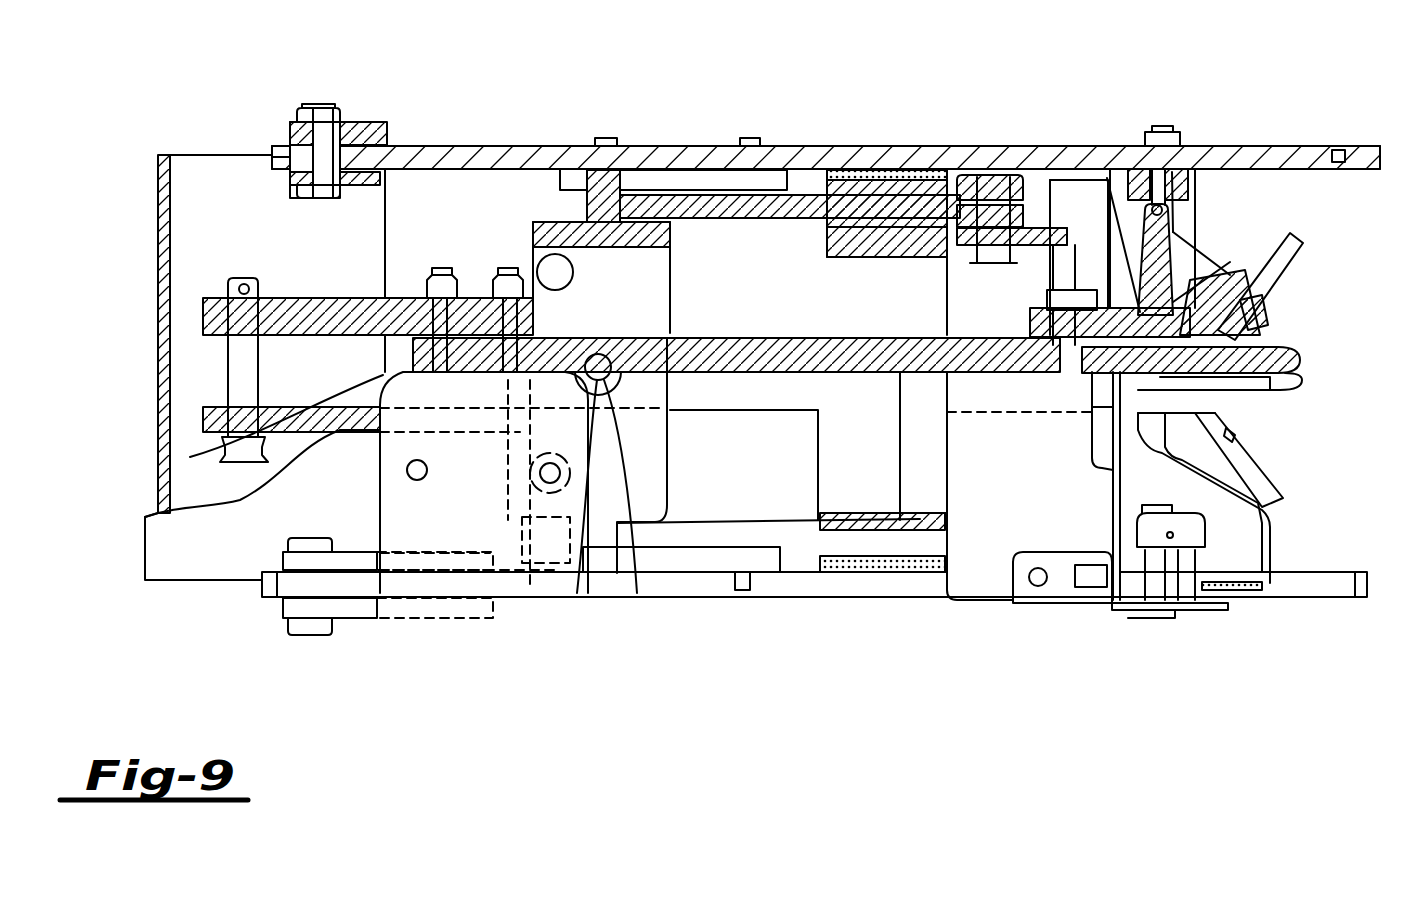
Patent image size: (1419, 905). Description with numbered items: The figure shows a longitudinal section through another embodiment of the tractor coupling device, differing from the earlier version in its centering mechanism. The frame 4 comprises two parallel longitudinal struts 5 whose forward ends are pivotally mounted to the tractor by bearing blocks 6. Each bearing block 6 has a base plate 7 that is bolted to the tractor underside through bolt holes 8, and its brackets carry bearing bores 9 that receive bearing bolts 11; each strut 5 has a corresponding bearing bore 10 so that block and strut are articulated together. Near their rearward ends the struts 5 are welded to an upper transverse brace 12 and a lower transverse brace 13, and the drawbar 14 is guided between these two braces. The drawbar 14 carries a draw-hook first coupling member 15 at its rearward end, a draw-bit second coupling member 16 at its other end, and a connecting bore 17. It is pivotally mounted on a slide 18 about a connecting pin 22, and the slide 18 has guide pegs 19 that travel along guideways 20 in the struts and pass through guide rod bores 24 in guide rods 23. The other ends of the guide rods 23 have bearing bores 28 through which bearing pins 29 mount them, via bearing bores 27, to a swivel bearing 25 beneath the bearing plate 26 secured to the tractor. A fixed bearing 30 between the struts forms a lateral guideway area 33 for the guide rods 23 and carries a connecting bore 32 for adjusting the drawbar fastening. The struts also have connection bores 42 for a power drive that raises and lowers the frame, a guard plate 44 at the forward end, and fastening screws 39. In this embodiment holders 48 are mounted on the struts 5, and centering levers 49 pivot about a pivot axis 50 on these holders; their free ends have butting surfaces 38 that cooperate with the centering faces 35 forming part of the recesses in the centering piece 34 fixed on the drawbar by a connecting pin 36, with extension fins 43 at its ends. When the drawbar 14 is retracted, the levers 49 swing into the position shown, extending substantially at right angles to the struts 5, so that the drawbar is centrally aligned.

The frame 4 is at (960, 190).
The longitudinal struts 5 is at (807, 165).
The bearing blocks 6 is at (387, 146).
The base plate 7 is at (383, 490).
The bolt holes 8 is at (428, 475).
The bearing bores 9 is at (330, 104).
The bearing bore 10 is at (323, 200).
The bearing bolts 11 is at (387, 128).
The upper transverse brace 12 is at (1232, 542).
The lower transverse brace 13 is at (1200, 200).
The drawbar 14 is at (750, 348).
The first coupling member 15 is at (1300, 380).
The second coupling member 16 is at (208, 303).
The connecting bore 17 is at (640, 598).
The slide 18 is at (573, 272).
The guide pegs 19 is at (600, 178).
The guideways 20 is at (686, 175).
The connecting pin 22 is at (540, 474).
The guide rods 23 is at (845, 215).
The guide rod bores 24 is at (615, 205).
The swivel bearing 25 is at (998, 513).
The bearing plate 26 is at (1055, 587).
The bearing bores 27 is at (1000, 245).
The bearing bores 28 is at (1046, 224).
The bearing pins 29 is at (985, 240).
The fixed bearing 30 is at (917, 190).
The connecting bore 32 is at (905, 380).
The lateral guideway area 33 is at (878, 230).
The centering piece 34 is at (1280, 242).
The centering faces 35 is at (1100, 300).
The connecting pin 36 is at (1170, 345).
The butting surfaces 38 is at (1250, 312).
The fastening screws 39 is at (1160, 132).
The connection bores 42 is at (1342, 148).
The extension fins 43 is at (1275, 510).
The guard plate 44 is at (193, 545).
The holders 48 is at (1118, 300).
The centering levers 49 is at (1180, 250).
The pivot axis 50 is at (1135, 195).